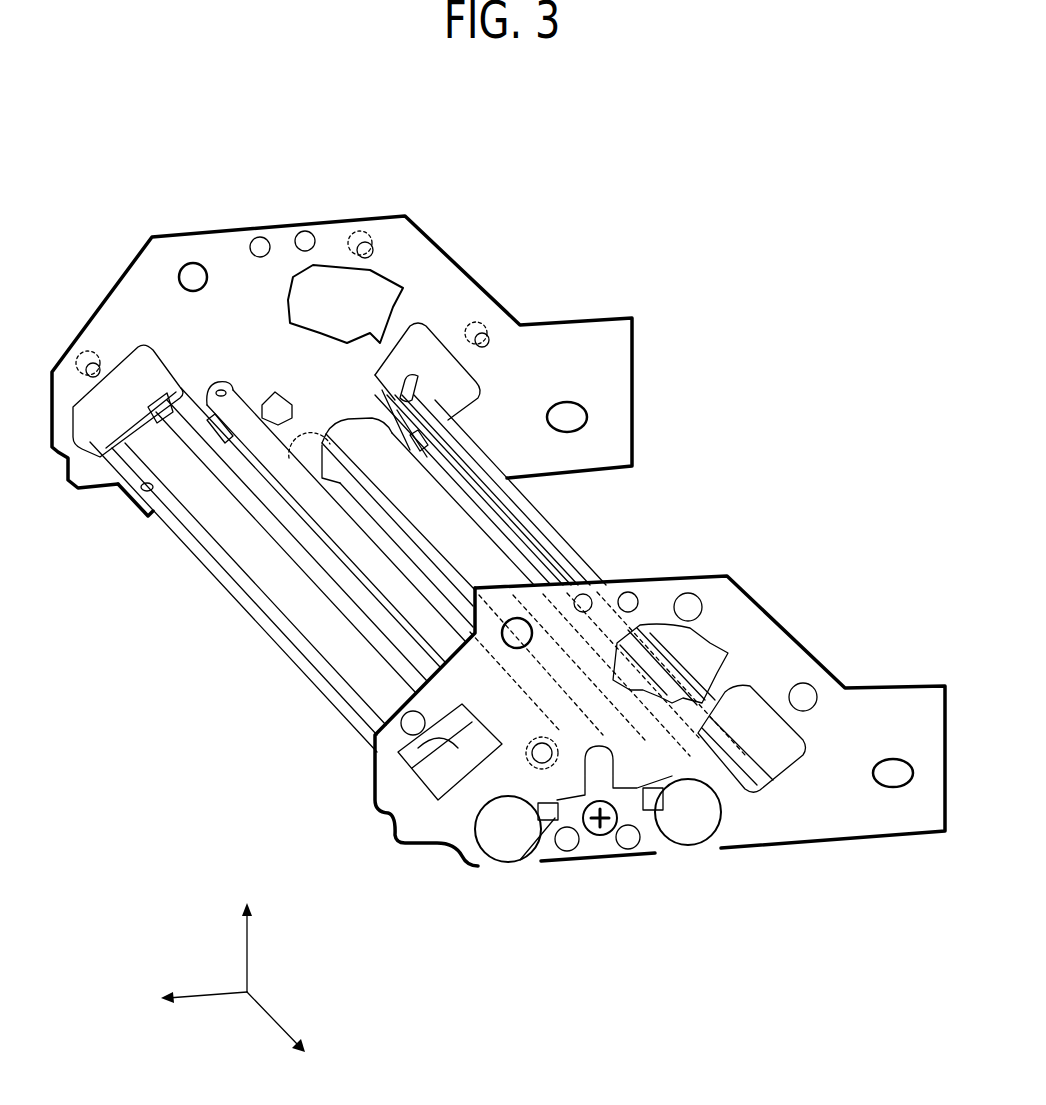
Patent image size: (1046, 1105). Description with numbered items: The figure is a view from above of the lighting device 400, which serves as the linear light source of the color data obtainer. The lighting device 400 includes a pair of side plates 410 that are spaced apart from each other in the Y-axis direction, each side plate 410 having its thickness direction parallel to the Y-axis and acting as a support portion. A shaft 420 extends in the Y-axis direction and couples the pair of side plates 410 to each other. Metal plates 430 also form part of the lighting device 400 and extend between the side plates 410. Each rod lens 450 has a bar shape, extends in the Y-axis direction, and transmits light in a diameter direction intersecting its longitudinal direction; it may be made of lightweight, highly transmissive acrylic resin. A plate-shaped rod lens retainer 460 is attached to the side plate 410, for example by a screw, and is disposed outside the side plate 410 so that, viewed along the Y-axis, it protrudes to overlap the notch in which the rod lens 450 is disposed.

The lighting device 400 is at (92, 172).
The side plate 410 is at (571, 345).
The shaft 420 is at (235, 418).
The metal plate 430 is at (550, 538).
The rod lens 450 is at (513, 840).
The rod lens retainer 460 is at (600, 840).